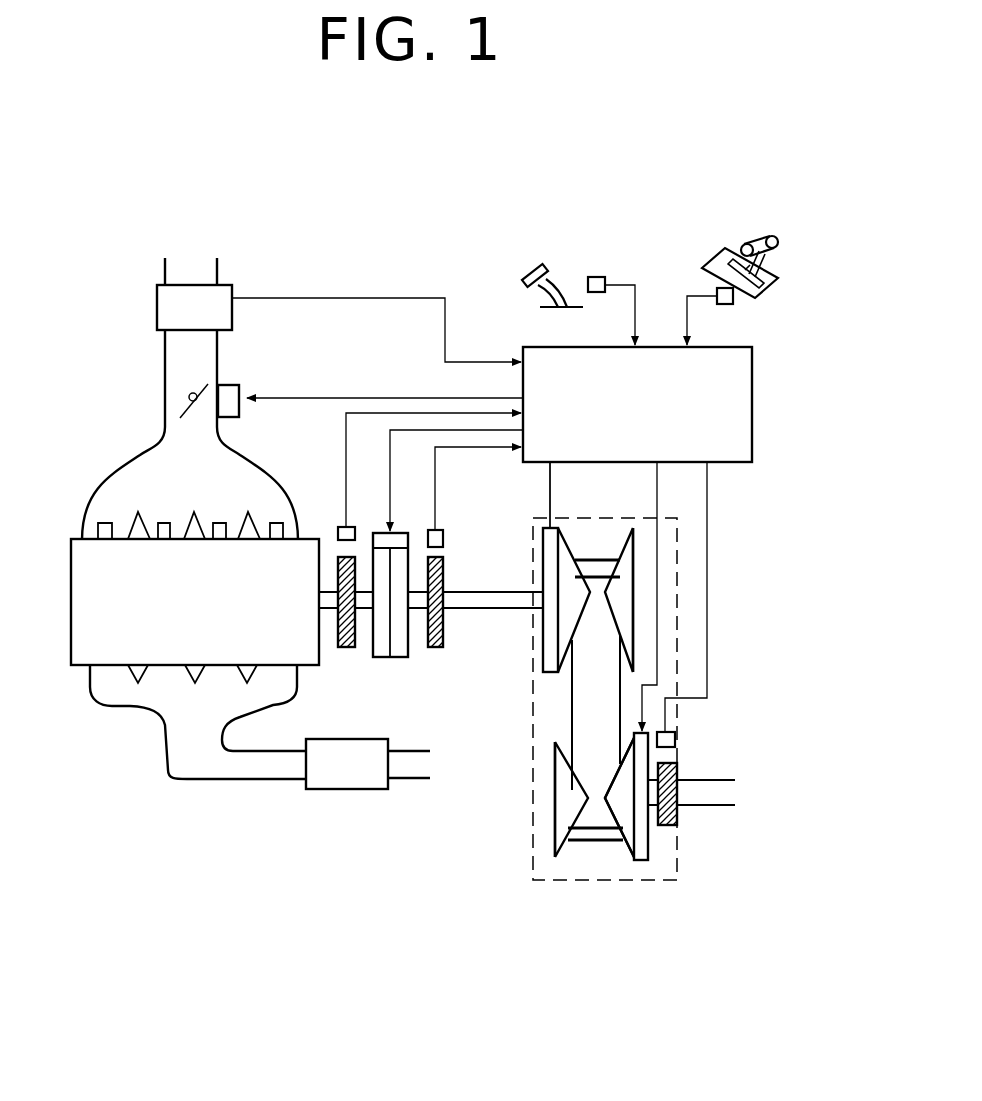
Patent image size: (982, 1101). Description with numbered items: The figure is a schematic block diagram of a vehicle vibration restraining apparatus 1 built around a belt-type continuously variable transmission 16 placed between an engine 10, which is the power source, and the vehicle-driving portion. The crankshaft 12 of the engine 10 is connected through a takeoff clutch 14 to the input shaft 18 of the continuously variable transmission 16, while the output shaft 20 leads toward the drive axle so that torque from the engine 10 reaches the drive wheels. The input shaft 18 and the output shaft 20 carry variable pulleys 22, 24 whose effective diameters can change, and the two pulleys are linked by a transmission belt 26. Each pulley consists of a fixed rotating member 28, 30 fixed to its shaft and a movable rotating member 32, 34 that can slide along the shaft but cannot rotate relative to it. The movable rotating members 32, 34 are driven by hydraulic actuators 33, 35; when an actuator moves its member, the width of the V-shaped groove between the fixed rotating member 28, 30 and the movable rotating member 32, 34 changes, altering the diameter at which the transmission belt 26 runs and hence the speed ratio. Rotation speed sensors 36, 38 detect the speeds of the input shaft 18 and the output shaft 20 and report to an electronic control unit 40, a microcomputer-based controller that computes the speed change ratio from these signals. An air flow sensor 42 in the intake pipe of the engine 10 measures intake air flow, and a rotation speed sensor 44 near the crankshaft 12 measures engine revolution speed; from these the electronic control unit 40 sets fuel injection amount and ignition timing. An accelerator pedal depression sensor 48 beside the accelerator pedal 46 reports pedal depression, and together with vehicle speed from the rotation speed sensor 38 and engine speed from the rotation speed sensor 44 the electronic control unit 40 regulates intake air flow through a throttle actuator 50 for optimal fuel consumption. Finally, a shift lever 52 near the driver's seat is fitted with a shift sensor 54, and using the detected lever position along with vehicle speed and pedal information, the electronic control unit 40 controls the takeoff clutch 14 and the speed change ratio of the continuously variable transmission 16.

The vehicle vibration restraining apparatus 1 is at (841, 269).
The engine 10 is at (83, 667).
The crankshaft 12 is at (327, 613).
The takeoff clutch 14 is at (382, 528).
The continuously variable transmission 16 is at (593, 880).
The input shaft 18 is at (483, 606).
The output shaft 20 is at (717, 797).
The variable pulley 22 is at (551, 682).
The variable pulley 24 is at (516, 861).
The transmission belt 26 is at (603, 690).
The fixed rotating member 28 is at (623, 610).
The fixed rotating member 30 is at (570, 788).
The movable rotating member 32 is at (568, 580).
The hydraulic actuator 33 is at (533, 551).
The movable rotating member 34 is at (623, 813).
The hydraulic actuator 35 is at (648, 847).
The rotation speed sensor 36 is at (443, 537).
The rotation speed sensor 38 is at (675, 740).
The electronic control unit 40 is at (752, 408).
The air flow sensor 42 is at (222, 294).
The rotation speed sensor 44 is at (342, 527).
The accelerator pedal 46 is at (538, 267).
The accelerator pedal depression sensor 48 is at (596, 277).
The throttle actuator 50 is at (240, 390).
The shift lever 52 is at (757, 242).
The shift sensor 54 is at (733, 302).